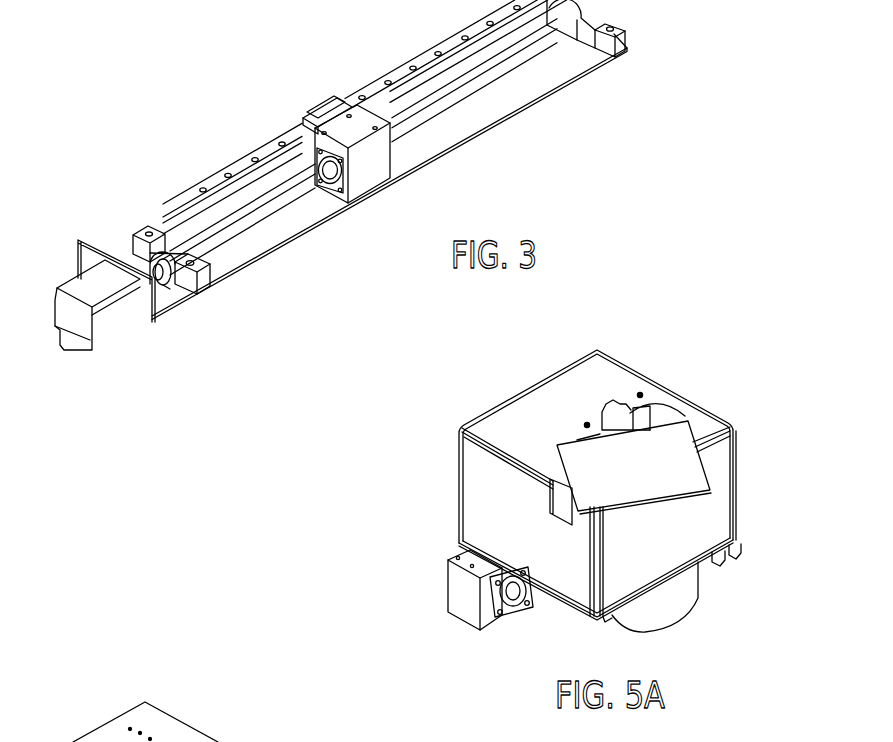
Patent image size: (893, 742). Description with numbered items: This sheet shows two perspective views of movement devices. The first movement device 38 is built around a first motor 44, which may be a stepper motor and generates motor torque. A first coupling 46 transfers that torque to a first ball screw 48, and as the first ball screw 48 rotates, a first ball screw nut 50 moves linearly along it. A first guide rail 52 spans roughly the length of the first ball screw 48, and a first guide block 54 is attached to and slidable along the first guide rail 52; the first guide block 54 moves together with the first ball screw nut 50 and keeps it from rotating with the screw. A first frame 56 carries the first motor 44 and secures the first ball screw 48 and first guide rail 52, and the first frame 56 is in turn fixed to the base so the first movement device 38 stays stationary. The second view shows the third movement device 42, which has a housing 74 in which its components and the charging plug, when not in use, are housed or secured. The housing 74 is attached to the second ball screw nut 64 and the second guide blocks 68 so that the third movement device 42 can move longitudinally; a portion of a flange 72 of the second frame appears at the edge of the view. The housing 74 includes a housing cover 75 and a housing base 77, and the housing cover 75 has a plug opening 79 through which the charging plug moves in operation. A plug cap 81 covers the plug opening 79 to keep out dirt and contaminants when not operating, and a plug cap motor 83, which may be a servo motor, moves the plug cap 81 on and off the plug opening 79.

In FIG. 3, the first movement device 38 is at (283, 27).
In FIG. 3, the first motor 44 is at (120, 332).
In FIG. 3, the first coupling 46 is at (160, 290).
In FIG. 3, the first ball screw 48 is at (289, 206).
In FIG. 3, the first ball screw nut 50 is at (392, 162).
In FIG. 3, the first guide rail 52 is at (243, 160).
In FIG. 3, the first guide block 54 is at (317, 110).
In FIG. 3, the first frame 56 is at (537, 100).
In FIG. 5A, the third movement device 42 is at (742, 338).
In FIG. 5A, the second ball screw nut 64 is at (447, 580).
In FIG. 5A, the second guide blocks 68 is at (730, 560).
In FIG. 5A, the flanges 72 is at (183, 722).
In FIG. 5A, the housing 74 is at (455, 450).
In FIG. 5A, the housing cover 75 is at (737, 485).
In FIG. 5A, the housing base 77 is at (573, 608).
In FIG. 5A, the plug opening 79 is at (667, 418).
In FIG. 5A, the plug cap 81 is at (577, 440).
In FIG. 5A, the plug cap motor 83 is at (547, 502).